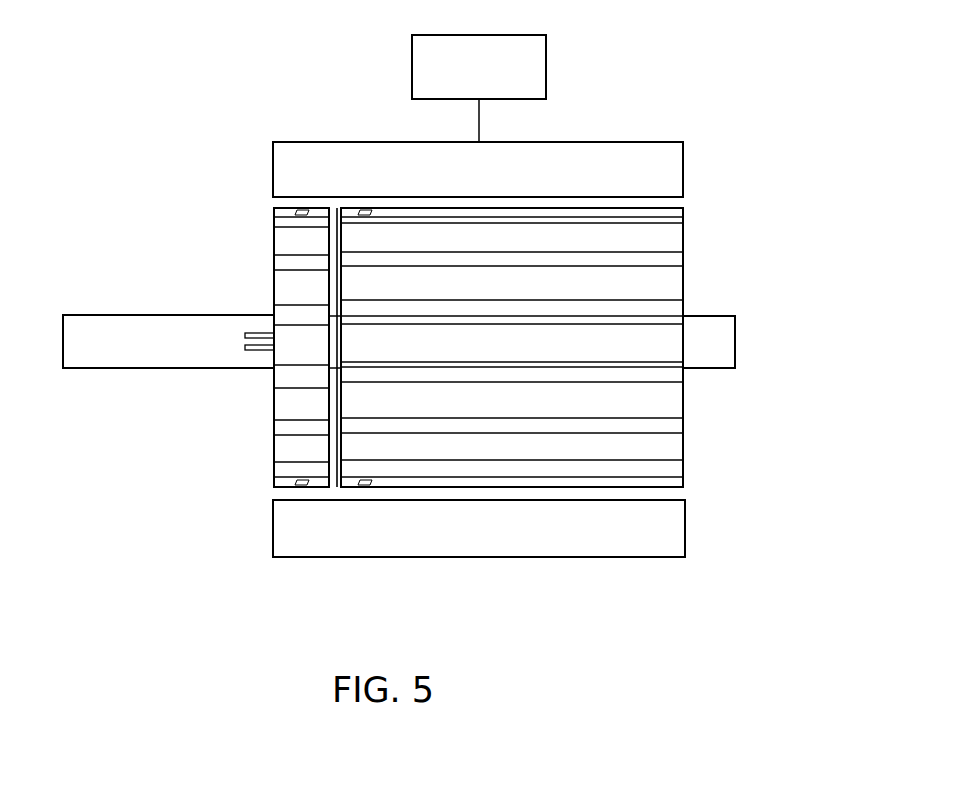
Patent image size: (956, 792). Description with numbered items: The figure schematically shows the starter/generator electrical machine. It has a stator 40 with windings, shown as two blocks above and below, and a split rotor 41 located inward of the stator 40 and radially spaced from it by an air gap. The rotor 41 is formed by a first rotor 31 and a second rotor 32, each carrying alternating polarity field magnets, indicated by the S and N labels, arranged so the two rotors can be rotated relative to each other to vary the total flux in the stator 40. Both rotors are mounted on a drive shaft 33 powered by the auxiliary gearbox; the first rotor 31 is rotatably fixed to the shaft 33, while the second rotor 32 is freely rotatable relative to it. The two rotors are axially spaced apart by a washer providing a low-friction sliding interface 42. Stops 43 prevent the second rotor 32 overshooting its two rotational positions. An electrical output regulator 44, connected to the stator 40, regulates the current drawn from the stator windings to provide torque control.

The first rotor 31 is at (686, 233).
The second rotor 32 is at (274, 230).
The drive shaft 33 is at (737, 345).
The stator 40 is at (463, 183).
The rotor 41 is at (716, 424).
The low-friction sliding interface 42 is at (334, 487).
The stops 43 is at (263, 332).
The electrical output regulator 44 is at (462, 82).